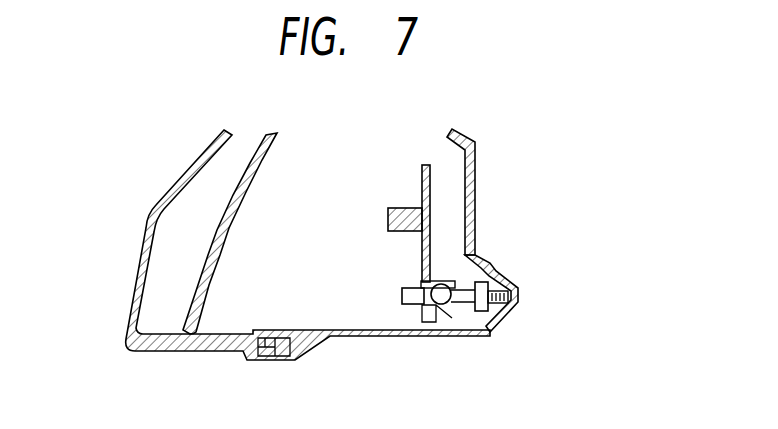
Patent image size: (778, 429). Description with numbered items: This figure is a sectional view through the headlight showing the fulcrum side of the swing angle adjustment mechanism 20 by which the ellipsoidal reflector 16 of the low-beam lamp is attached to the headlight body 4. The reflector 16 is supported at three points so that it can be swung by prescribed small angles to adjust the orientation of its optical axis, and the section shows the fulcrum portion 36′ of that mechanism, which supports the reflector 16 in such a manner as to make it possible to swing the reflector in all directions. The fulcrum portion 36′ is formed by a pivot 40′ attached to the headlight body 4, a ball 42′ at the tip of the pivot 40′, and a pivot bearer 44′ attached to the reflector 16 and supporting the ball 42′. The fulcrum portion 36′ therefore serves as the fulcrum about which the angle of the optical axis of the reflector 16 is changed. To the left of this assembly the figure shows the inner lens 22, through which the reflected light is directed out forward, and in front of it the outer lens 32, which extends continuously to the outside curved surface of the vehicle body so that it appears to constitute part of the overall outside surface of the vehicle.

The outer lens 32 is at (140, 270).
The inner lens 22 is at (218, 253).
The reflector 16 is at (422, 187).
The headlight body 4 is at (475, 190).
The fulcrum portion 36′ is at (462, 278).
The pivot bearer 44′ is at (418, 285).
The ball 42′ is at (442, 335).
The pivot 40′ is at (477, 322).
The swing angle adjustment mechanism 20 is at (525, 272).